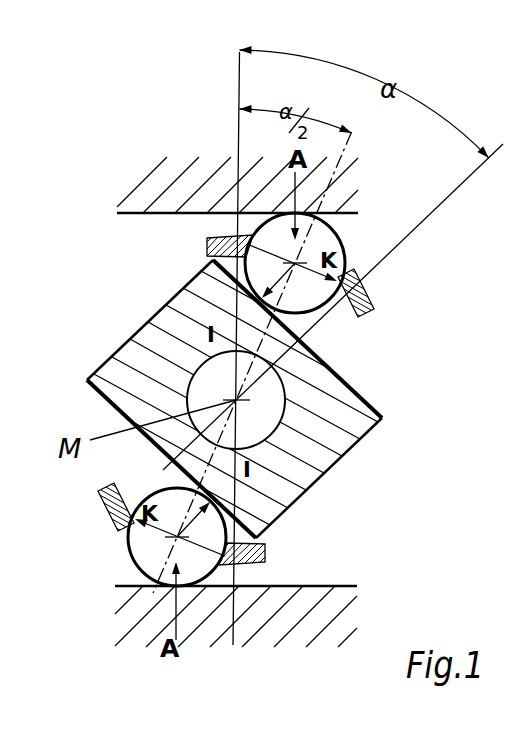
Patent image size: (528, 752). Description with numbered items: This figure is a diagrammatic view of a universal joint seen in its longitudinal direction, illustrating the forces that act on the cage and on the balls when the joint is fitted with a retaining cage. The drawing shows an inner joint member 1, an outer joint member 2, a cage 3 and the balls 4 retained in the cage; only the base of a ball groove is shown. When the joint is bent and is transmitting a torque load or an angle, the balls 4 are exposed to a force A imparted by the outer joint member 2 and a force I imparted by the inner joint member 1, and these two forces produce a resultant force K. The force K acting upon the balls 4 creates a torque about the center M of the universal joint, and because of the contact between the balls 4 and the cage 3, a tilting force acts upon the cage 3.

The inner joint member 1 is at (333, 422).
The outer joint member 2 is at (163, 183).
The cage 3 is at (372, 298).
The balls 4 is at (270, 390).